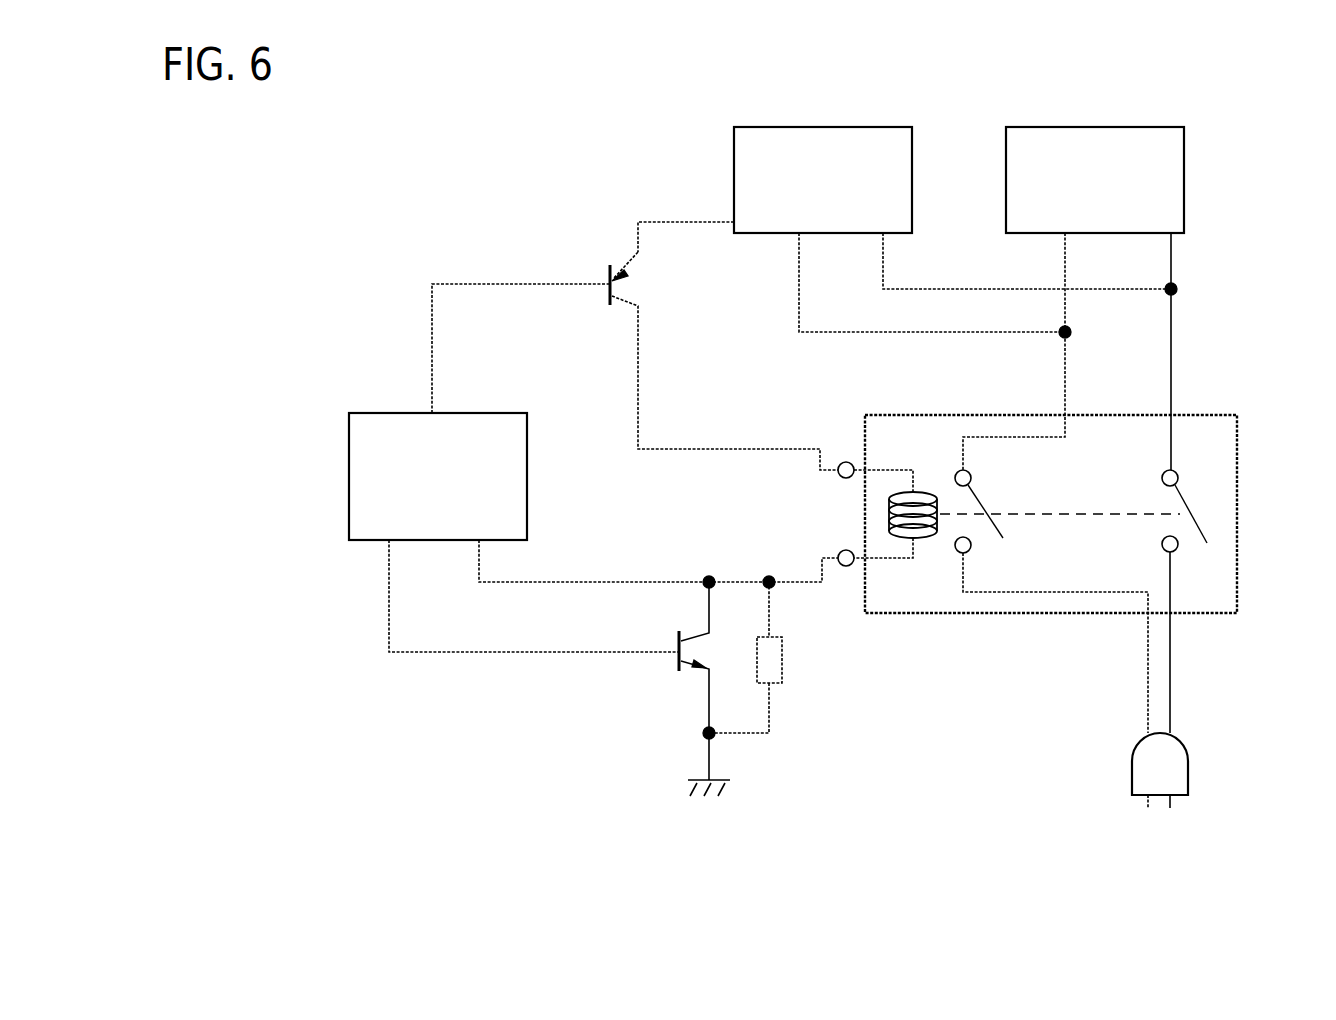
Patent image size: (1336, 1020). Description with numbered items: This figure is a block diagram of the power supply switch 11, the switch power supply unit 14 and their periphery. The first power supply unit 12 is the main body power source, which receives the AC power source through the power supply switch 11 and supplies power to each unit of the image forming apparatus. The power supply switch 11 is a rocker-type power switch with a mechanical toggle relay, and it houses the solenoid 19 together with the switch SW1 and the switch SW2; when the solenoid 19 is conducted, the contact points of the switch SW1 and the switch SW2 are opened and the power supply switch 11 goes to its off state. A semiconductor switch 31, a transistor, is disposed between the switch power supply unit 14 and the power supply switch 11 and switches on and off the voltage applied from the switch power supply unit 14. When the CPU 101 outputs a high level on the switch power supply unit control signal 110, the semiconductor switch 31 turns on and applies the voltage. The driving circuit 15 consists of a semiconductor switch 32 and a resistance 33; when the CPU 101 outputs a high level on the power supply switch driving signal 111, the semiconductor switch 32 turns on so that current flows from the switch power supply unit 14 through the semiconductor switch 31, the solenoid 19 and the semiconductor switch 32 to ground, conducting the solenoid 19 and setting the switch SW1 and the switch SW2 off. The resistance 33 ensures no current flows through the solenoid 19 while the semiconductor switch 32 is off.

The switch power supply unit 14 is at (828, 127).
The first power supply unit 12 is at (1102, 127).
The CPU 101 is at (527, 475).
The switch power supply unit control signal 110 is at (474, 284).
The semiconductor switch 31 is at (705, 361).
The power supply switch driving signal 111 is at (443, 652).
The driving circuit 15 is at (685, 716).
The semiconductor switch 32 is at (677, 681).
The resistance 33 is at (768, 657).
The power supply switch 11 is at (923, 613).
The solenoid 19 is at (888, 519).
The switch SW1 is at (988, 509).
The switch SW2 is at (1195, 509).